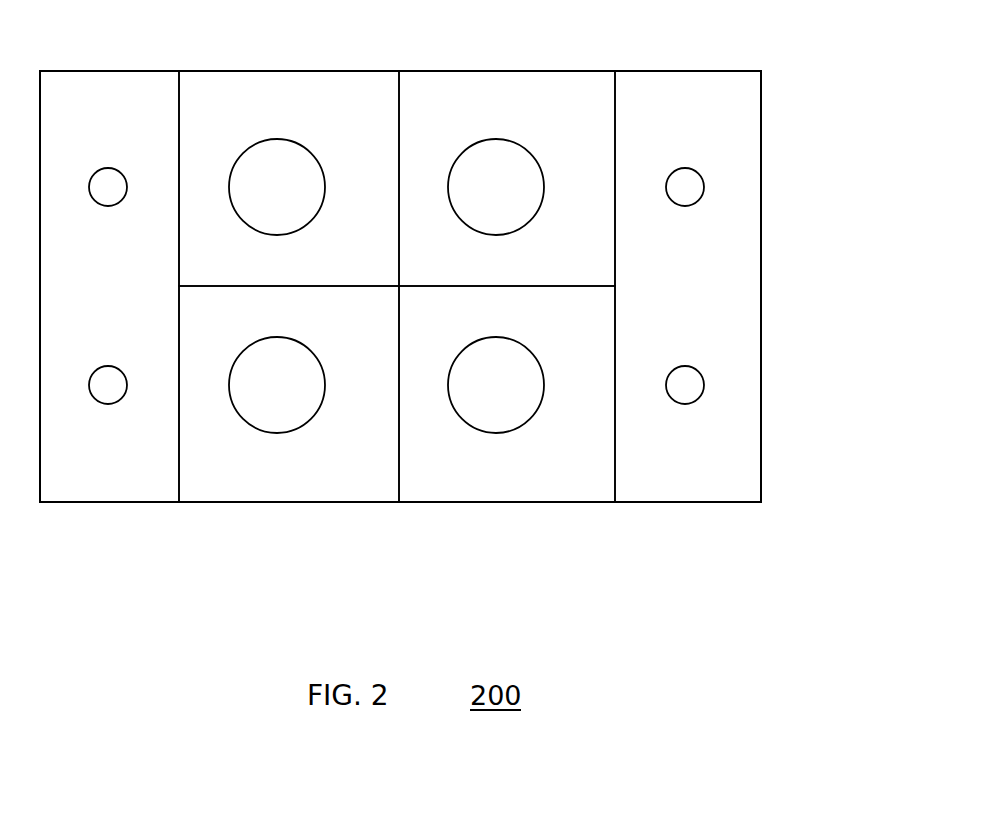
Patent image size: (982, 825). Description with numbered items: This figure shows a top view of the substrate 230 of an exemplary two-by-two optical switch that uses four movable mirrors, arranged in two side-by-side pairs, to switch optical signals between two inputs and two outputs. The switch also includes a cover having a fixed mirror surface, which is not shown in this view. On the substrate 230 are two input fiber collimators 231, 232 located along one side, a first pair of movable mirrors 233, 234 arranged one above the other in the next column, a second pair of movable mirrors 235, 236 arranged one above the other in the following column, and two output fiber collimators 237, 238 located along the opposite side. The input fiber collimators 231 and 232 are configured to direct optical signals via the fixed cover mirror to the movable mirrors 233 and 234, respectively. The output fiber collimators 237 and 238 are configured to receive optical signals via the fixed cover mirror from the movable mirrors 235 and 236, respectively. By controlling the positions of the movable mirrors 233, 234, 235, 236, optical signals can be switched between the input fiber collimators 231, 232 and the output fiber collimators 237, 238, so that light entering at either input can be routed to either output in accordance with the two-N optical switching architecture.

The substrate 230 is at (775, 330).
The input fiber collimator 231 is at (90, 117).
The input fiber collimator 232 is at (120, 473).
The movable mirror 233 is at (272, 92).
The movable mirror 234 is at (278, 478).
The movable mirror 235 is at (494, 100).
The movable mirror 236 is at (507, 472).
The output fiber collimator 237 is at (678, 100).
The output fiber collimator 238 is at (685, 472).